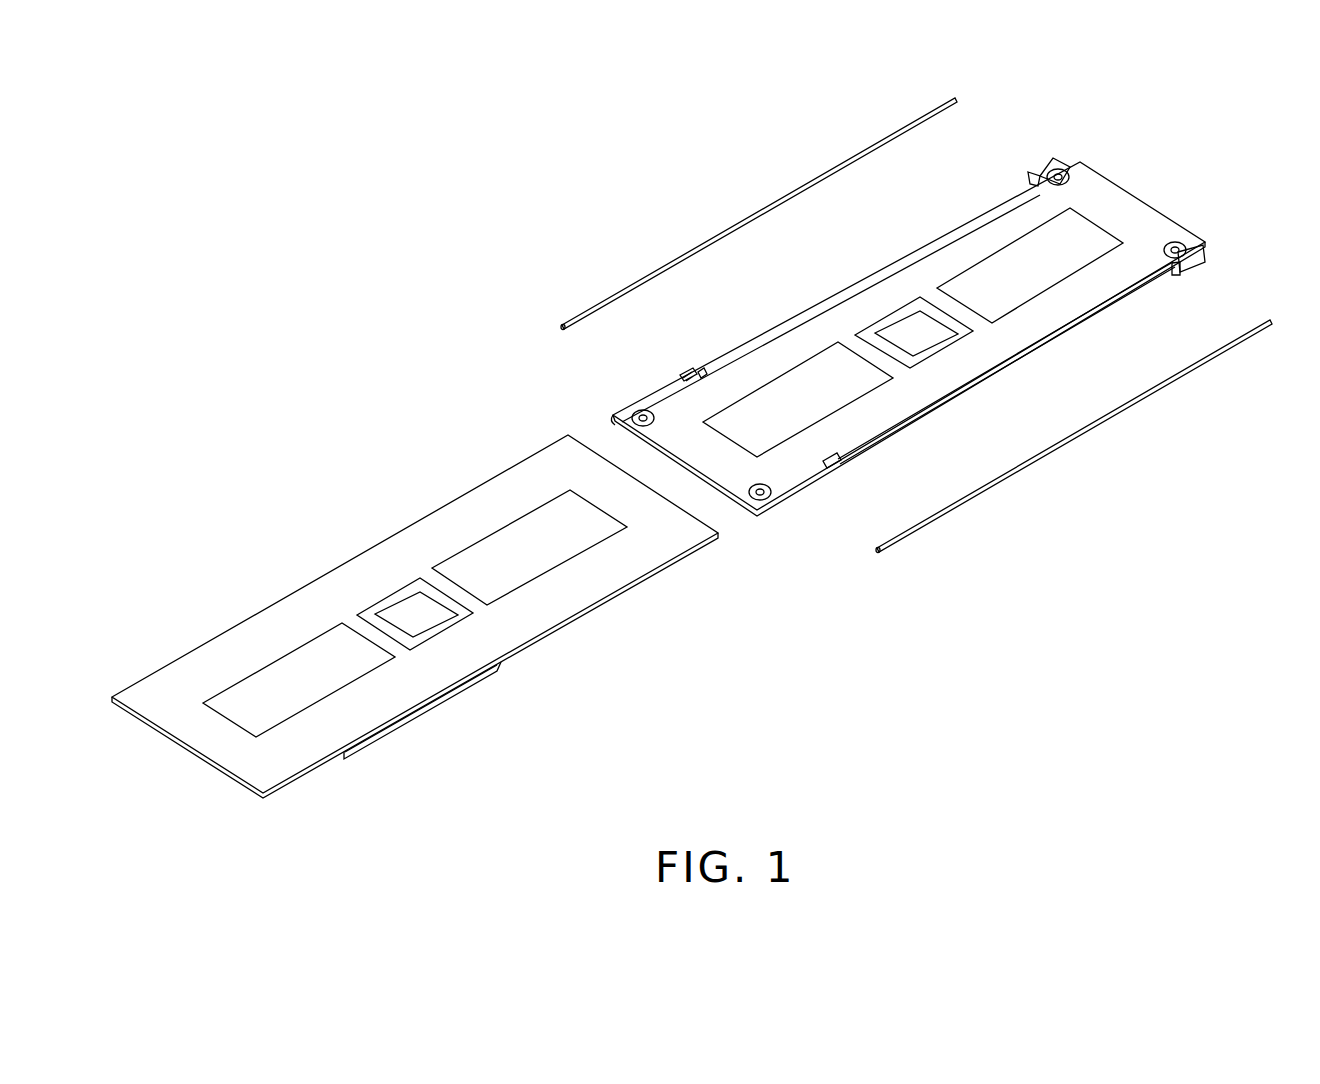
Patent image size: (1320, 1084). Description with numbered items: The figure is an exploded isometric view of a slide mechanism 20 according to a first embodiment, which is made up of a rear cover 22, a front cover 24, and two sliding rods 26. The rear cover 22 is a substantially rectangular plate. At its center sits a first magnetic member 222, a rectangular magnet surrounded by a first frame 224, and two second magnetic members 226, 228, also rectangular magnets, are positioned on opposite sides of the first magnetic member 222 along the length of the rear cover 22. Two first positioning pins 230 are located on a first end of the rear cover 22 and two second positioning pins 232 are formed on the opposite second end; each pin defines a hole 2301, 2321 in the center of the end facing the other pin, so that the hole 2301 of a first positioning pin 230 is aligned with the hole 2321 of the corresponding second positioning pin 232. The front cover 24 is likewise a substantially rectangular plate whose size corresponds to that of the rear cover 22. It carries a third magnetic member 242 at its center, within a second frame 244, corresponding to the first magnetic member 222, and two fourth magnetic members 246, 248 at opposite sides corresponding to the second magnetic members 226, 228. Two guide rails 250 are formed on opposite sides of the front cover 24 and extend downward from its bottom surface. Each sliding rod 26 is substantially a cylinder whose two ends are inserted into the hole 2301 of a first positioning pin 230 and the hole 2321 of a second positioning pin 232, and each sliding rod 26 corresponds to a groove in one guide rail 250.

The slide mechanism 20 is at (466, 288).
The rear cover 22 is at (1120, 164).
The front cover 24 is at (298, 560).
The sliding rod 26 is at (722, 233).
The first magnetic member 222 is at (893, 332).
The first frame 224 is at (912, 307).
The second magnetic member 226 is at (1022, 245).
The second magnetic member 228 is at (772, 392).
The first positioning pin 230 is at (1047, 168).
The second positioning pin 232 is at (633, 410).
The hole 2301 is at (1173, 267).
The hole 2321 is at (837, 468).
The third magnetic member 242 is at (402, 613).
The second frame 244 is at (437, 593).
The fourth magnetic member 246 is at (530, 532).
The fourth magnetic member 248 is at (245, 700).
The guide rail 250 is at (397, 728).